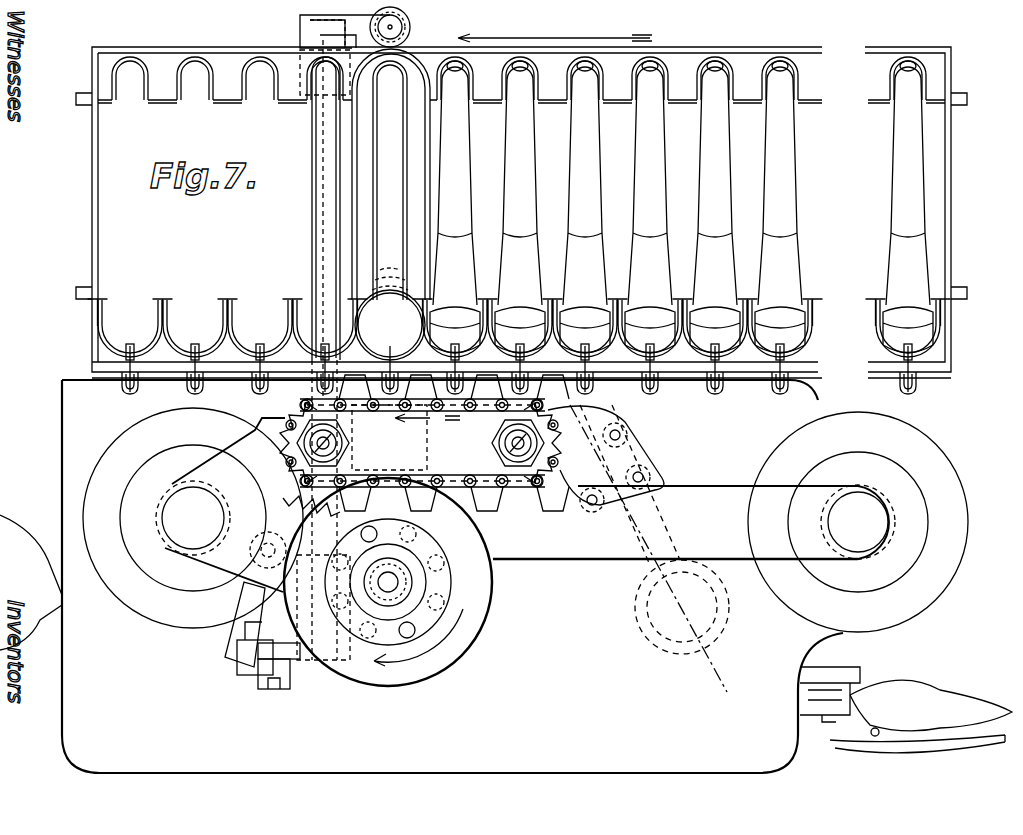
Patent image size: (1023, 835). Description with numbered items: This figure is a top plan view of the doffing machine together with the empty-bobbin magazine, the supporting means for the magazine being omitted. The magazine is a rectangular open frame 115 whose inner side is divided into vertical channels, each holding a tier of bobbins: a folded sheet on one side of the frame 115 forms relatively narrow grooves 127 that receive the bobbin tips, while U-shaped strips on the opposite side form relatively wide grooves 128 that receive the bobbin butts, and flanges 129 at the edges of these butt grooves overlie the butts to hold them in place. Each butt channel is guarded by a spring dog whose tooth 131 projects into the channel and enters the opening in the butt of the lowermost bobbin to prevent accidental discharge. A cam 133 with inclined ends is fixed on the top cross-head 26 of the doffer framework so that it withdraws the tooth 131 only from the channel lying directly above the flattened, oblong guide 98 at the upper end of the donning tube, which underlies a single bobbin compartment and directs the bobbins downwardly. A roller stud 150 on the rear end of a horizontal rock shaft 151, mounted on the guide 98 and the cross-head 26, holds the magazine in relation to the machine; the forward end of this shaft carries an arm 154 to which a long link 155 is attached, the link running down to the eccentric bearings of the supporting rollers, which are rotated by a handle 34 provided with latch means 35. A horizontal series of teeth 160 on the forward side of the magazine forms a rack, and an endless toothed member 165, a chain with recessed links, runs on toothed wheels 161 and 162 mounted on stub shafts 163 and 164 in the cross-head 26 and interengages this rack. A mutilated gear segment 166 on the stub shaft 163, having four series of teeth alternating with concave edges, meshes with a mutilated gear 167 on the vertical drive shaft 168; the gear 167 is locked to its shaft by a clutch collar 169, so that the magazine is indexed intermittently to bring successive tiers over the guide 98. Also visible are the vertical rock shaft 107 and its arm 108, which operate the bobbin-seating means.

The cross-head 26 is at (690, 495).
The handle 34 is at (900, 705).
The latch means 35 is at (915, 745).
The flared guide portion 98 is at (425, 172).
The vertical rock shaft 107 is at (220, 558).
The arm 108 is at (235, 628).
The frame 115 is at (92, 210).
The grooves or recesses 127 is at (128, 88).
The recesses or grooves 128 is at (218, 330).
The flanges 129 is at (160, 300).
The tooth 131 is at (270, 298).
The cam 133 is at (423, 375).
The roller stud 150 is at (410, 27).
The horizontal rock shaft 151 is at (318, 195).
The arm 154 is at (292, 680).
The long link 155 is at (258, 685).
The teeth 160 is at (190, 392).
The toothed wheel 161 is at (348, 425).
The toothed wheel 162 is at (498, 448).
The stub shaft 163 is at (280, 465).
The stub shaft 164 is at (700, 562).
The endless toothed member 165 is at (600, 402).
The mutilated gear segment 166 is at (378, 450).
The mutilated gear 167 is at (290, 510).
The vertical drive shaft 168 is at (400, 590).
The clutch collar 169 is at (404, 640).